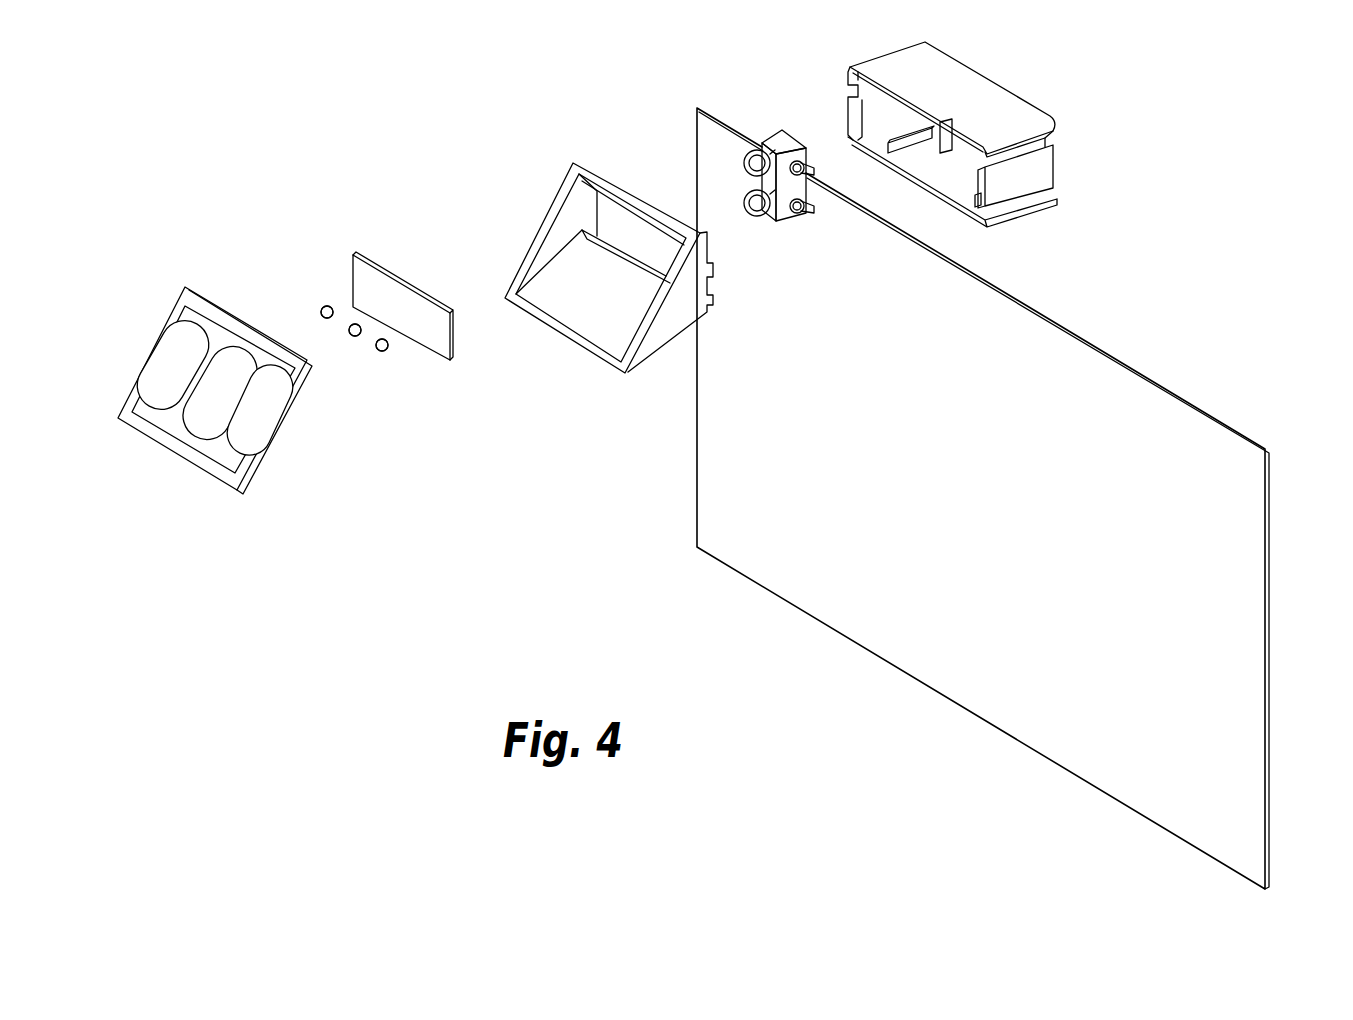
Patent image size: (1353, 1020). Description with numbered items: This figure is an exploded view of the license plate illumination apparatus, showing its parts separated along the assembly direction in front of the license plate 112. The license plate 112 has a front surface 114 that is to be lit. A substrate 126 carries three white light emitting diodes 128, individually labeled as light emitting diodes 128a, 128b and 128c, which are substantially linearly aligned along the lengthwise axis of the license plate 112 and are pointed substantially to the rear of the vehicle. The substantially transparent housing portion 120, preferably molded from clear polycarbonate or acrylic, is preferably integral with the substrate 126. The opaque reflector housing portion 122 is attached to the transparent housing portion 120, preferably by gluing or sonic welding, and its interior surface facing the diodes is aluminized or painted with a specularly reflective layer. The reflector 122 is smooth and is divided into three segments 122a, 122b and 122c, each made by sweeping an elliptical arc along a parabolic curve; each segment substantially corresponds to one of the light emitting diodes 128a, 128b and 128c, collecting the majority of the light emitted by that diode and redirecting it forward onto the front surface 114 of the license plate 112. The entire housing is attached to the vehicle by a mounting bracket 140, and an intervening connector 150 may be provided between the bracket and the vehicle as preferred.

The license plate 112 is at (1268, 505).
The front surface 114 is at (1193, 667).
The substantially transparent housing portion 120 is at (524, 227).
The reflector housing portion 122 is at (187, 420).
The reflector segment 122a is at (253, 412).
The reflector segment 122b is at (217, 398).
The reflector segment 122c is at (168, 363).
The substrate 126 is at (360, 277).
The light emitting diodes 128 is at (381, 375).
The light emitting diode 128a is at (388, 349).
The light emitting diode 128b is at (350, 336).
The light emitting diode 128c is at (321, 309).
The mounting bracket 140 is at (1027, 178).
The connector 150 is at (777, 145).